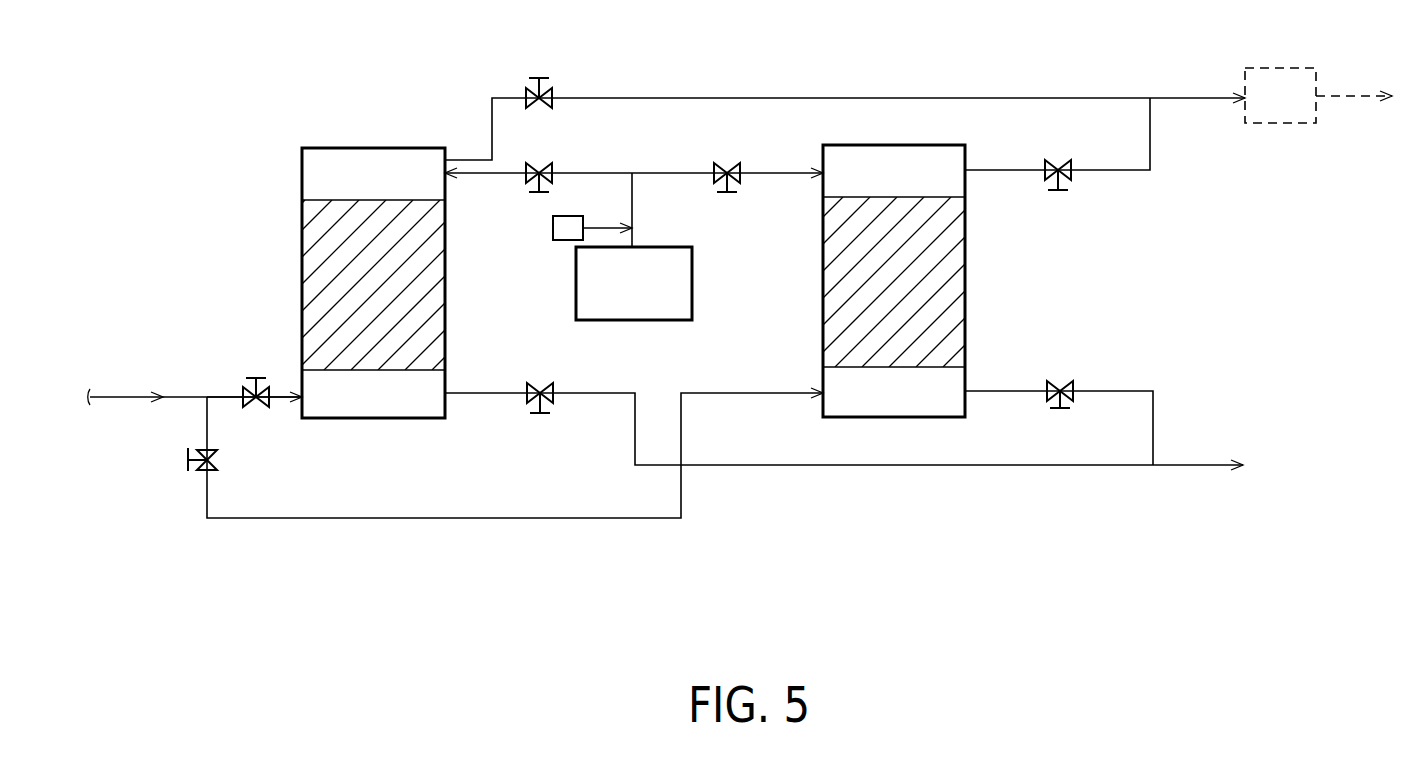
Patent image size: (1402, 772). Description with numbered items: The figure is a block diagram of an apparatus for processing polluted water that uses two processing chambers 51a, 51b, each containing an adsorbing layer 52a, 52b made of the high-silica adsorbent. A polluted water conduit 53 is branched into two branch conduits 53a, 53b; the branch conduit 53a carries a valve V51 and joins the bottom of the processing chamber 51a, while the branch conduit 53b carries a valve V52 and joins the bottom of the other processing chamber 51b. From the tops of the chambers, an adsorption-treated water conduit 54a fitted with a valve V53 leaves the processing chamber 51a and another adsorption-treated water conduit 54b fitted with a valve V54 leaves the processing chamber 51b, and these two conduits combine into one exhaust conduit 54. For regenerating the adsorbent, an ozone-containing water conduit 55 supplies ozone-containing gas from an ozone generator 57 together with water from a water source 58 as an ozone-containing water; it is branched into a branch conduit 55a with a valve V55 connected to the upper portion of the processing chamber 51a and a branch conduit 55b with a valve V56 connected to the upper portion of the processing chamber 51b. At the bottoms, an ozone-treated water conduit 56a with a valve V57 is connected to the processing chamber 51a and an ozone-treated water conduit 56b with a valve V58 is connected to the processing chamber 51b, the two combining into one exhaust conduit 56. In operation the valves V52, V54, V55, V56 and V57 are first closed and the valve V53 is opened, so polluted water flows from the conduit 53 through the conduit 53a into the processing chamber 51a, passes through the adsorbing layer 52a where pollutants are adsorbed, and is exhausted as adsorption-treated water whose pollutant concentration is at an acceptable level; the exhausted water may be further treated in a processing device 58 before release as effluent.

The processing chamber 51a is at (302, 228).
The adsorbing layer 52a is at (315, 277).
The processing chamber 51b is at (966, 237).
The adsorbing layer 52b is at (945, 272).
The polluted water conduit 53 is at (128, 398).
The branch conduit 53a is at (226, 395).
The branch conduit 53b is at (362, 516).
The exhaust conduit 54 is at (1198, 94).
The adsorption-treated water conduit 54a is at (793, 96).
The adsorption-treated water conduit 54b is at (1152, 147).
The ozone-containing water conduit 55 is at (633, 213).
The branch conduit 55a is at (583, 172).
The branch conduit 55b is at (781, 172).
The exhaust conduit 56 is at (1201, 466).
The ozone-treated water conduit 56a is at (988, 466).
The ozone-treated water conduit 56b is at (1155, 422).
The ozone generator 57 is at (576, 286).
The water source 58 is at (1290, 68).
The valve V51 is at (258, 410).
The valve V52 is at (188, 470).
The valve V53 is at (528, 88).
The valve V54 is at (1075, 180).
The valve V55 is at (532, 192).
The valve V56 is at (713, 165).
The valve V57 is at (553, 385).
The valve V58 is at (1075, 385).